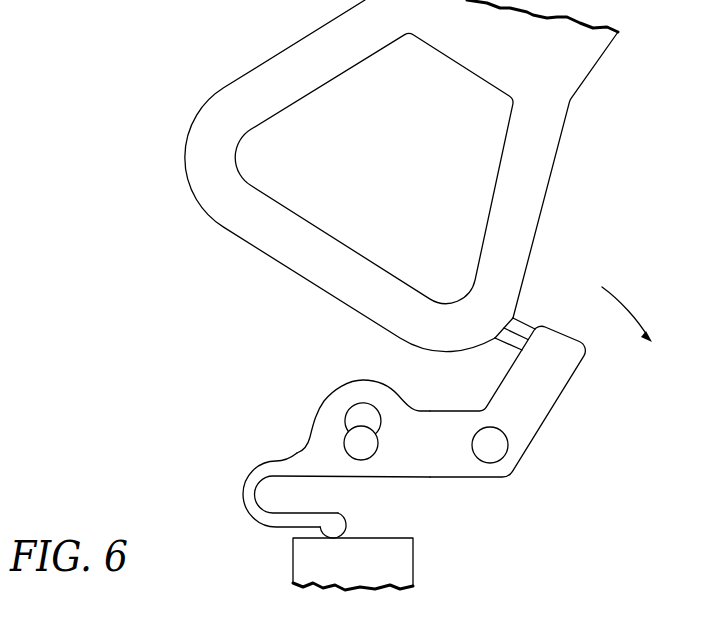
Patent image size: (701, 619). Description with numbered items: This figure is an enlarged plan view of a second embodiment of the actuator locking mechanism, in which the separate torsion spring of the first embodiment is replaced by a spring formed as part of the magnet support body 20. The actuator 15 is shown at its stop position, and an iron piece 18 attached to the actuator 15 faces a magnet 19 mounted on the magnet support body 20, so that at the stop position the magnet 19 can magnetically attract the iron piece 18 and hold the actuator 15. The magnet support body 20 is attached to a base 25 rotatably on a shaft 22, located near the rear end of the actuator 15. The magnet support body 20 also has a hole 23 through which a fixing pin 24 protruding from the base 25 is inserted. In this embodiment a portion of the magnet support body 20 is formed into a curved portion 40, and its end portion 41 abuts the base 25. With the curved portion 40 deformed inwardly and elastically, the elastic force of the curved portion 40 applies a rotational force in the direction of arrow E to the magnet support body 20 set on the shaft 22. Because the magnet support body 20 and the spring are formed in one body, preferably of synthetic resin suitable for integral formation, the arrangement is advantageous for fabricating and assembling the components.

The actuator 15 is at (560, 138).
The iron piece 18 is at (515, 318).
The magnet 19 is at (530, 328).
The magnet support body 20 is at (570, 382).
The shaft 22 is at (498, 448).
The hole 23 is at (345, 415).
The fixing pin 24 is at (378, 448).
The base 25 is at (413, 565).
The curved portion 40 is at (270, 501).
The end portion 41 is at (345, 523).
The arrow E is at (640, 315).